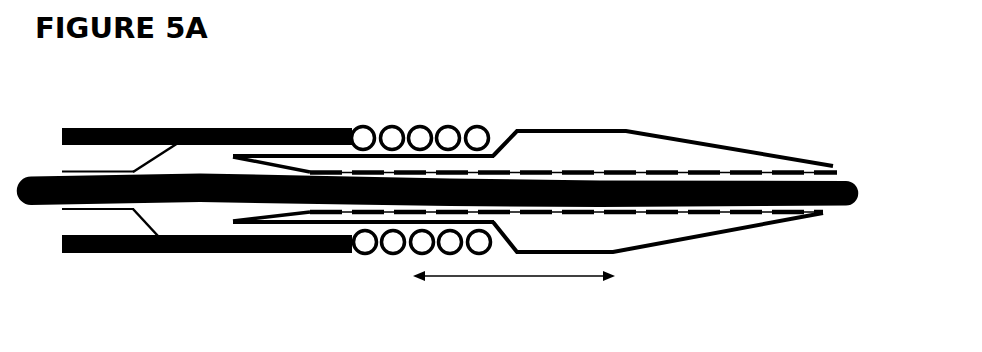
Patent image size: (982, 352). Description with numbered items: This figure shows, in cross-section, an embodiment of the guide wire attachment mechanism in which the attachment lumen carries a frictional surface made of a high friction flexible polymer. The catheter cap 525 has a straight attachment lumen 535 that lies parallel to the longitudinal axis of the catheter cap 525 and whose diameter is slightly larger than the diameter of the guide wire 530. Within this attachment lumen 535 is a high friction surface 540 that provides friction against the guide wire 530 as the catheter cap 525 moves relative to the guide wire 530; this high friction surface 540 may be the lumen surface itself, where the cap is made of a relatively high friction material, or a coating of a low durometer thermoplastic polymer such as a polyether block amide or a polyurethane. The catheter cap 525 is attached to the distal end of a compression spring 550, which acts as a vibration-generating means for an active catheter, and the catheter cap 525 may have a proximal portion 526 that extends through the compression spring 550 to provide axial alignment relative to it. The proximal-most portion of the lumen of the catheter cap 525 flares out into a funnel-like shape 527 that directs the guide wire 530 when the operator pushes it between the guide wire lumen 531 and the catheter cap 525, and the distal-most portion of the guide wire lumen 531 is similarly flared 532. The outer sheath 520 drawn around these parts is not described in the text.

The outer sheath 520 is at (98, 127).
The guide wire 530 is at (195, 173).
The guide wire lumen 531 is at (106, 206).
The flared portion of guide wire lumen 532 is at (133, 210).
The funnel-like shape 527 is at (281, 214).
The attachment lumen 535 is at (550, 178).
The catheter cap 525 is at (683, 127).
The high friction surface 540 is at (745, 217).
The compression spring 550 is at (396, 128).
The proximal portion 526 is at (386, 256).